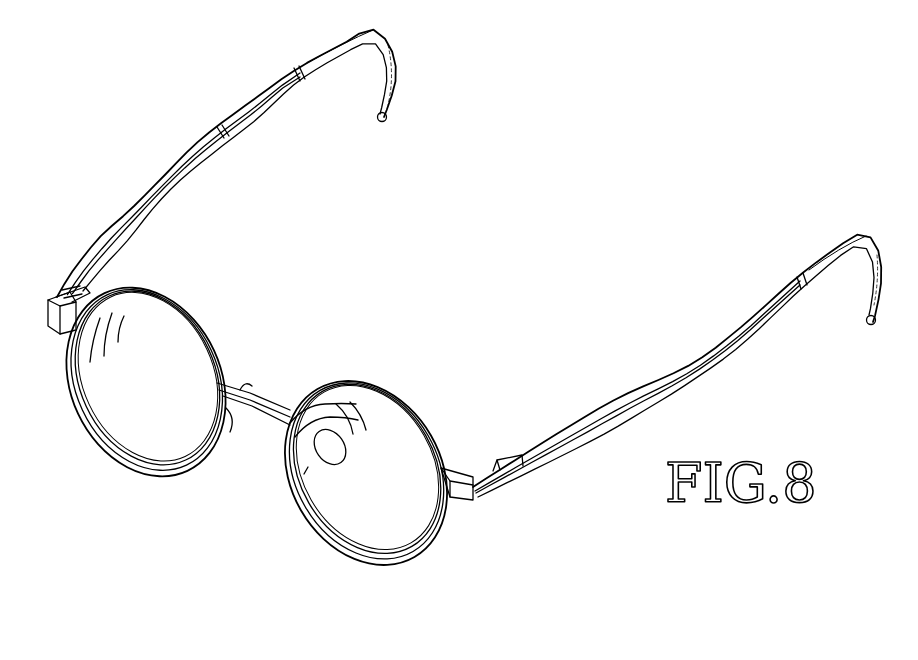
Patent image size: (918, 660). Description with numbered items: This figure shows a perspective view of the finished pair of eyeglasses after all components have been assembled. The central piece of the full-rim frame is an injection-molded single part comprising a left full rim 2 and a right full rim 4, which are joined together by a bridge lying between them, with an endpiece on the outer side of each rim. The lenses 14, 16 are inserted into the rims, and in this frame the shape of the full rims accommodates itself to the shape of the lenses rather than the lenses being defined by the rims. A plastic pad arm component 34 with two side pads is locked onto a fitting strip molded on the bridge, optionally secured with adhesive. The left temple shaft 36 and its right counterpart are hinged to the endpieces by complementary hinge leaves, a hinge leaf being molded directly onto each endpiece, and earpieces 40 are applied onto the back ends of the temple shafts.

The left full rim 2 is at (100, 451).
The right full rim 4 is at (449, 538).
The left lens 14 is at (172, 343).
The right lens 16 is at (368, 410).
The pad arm component 34 is at (678, 378).
The left temple shaft 36 is at (229, 134).
The earpieces 40 is at (330, 44).